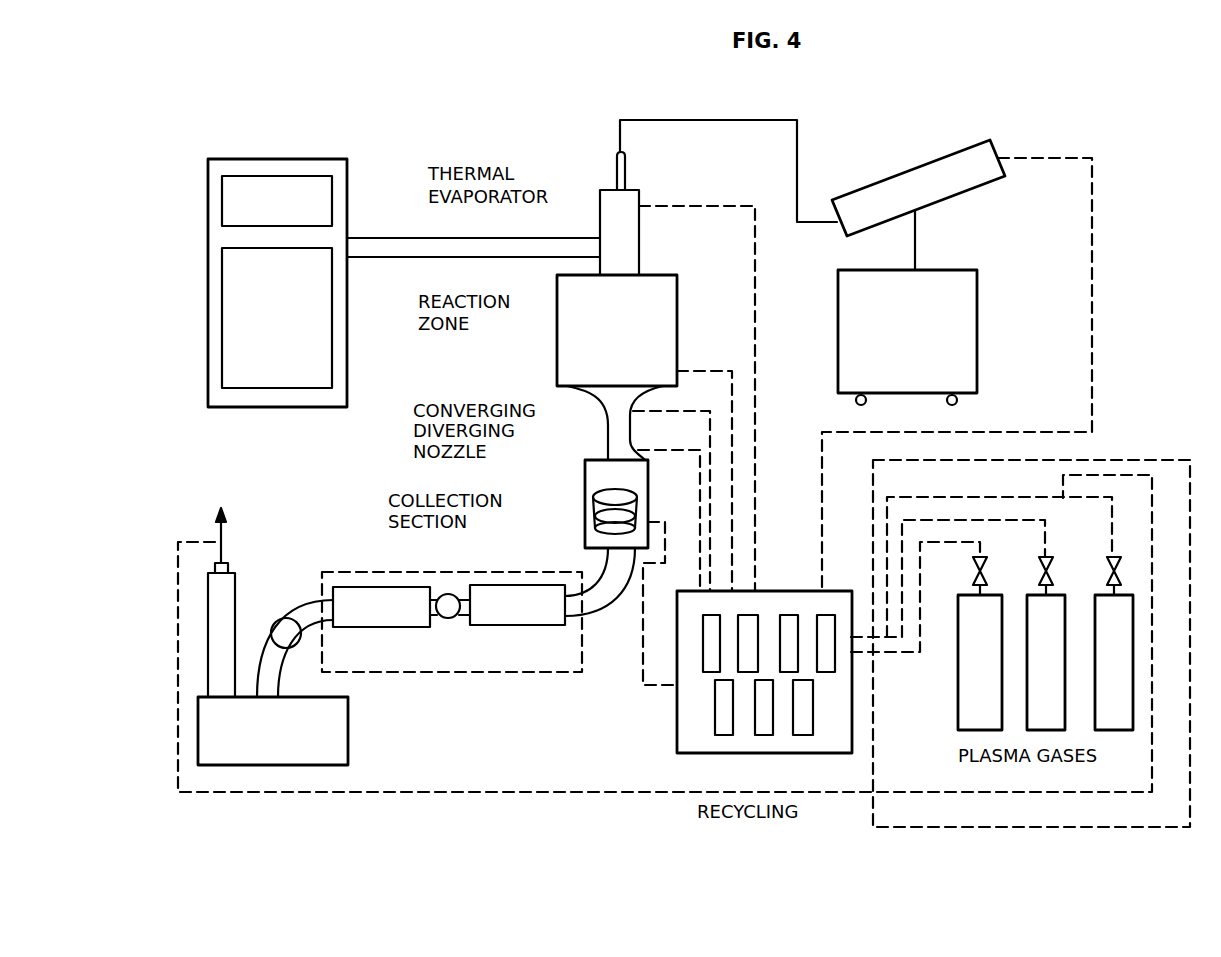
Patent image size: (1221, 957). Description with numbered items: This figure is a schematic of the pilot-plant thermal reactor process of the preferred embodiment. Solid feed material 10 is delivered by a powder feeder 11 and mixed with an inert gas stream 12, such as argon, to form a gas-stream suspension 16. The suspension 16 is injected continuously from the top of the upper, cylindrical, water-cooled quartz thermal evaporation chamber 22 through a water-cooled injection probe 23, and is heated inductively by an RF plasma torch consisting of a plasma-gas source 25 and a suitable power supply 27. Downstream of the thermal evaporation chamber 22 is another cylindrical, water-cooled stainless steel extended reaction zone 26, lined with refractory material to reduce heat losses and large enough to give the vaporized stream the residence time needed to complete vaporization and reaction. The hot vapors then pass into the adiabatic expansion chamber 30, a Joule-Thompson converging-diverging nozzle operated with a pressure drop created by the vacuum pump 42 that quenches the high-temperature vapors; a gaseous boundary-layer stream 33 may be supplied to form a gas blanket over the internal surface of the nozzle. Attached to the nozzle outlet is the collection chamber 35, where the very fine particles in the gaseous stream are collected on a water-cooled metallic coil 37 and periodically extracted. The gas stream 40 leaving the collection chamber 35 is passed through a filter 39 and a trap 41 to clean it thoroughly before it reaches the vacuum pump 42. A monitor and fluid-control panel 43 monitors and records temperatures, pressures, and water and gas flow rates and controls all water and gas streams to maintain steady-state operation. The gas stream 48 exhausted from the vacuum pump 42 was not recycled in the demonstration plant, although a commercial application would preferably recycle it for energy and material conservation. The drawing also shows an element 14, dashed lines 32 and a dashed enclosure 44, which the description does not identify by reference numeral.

The solid feed material 10 is at (915, 238).
The powder feeder 11 is at (977, 318).
The inert gas stream 12 is at (1092, 237).
The plasma torch 14 is at (935, 158).
The gas-stream suspension 16 is at (737, 120).
The thermal evaporation chamber 22 is at (639, 245).
The water-cooled injection probe 23 is at (625, 178).
The plasma-gas source 25 is at (755, 275).
The extended reaction zone 26 is at (557, 320).
The power supply 27 is at (292, 158).
The adiabatic expansion chamber 30 is at (603, 420).
The gas lines 32 is at (732, 372).
The gaseous boundary-layer stream 33 is at (688, 411).
The collection chamber 35 is at (585, 493).
The water-cooled metallic coil 37 is at (598, 525).
The filter 39 is at (513, 630).
The gas stream 40 is at (607, 600).
The trap 41 is at (383, 630).
The vacuum pump 42 is at (348, 712).
The monitor and fluid-control panel 43 is at (778, 753).
The filter and trap assembly 44 is at (500, 672).
The exhausted gas stream 48 is at (227, 535).